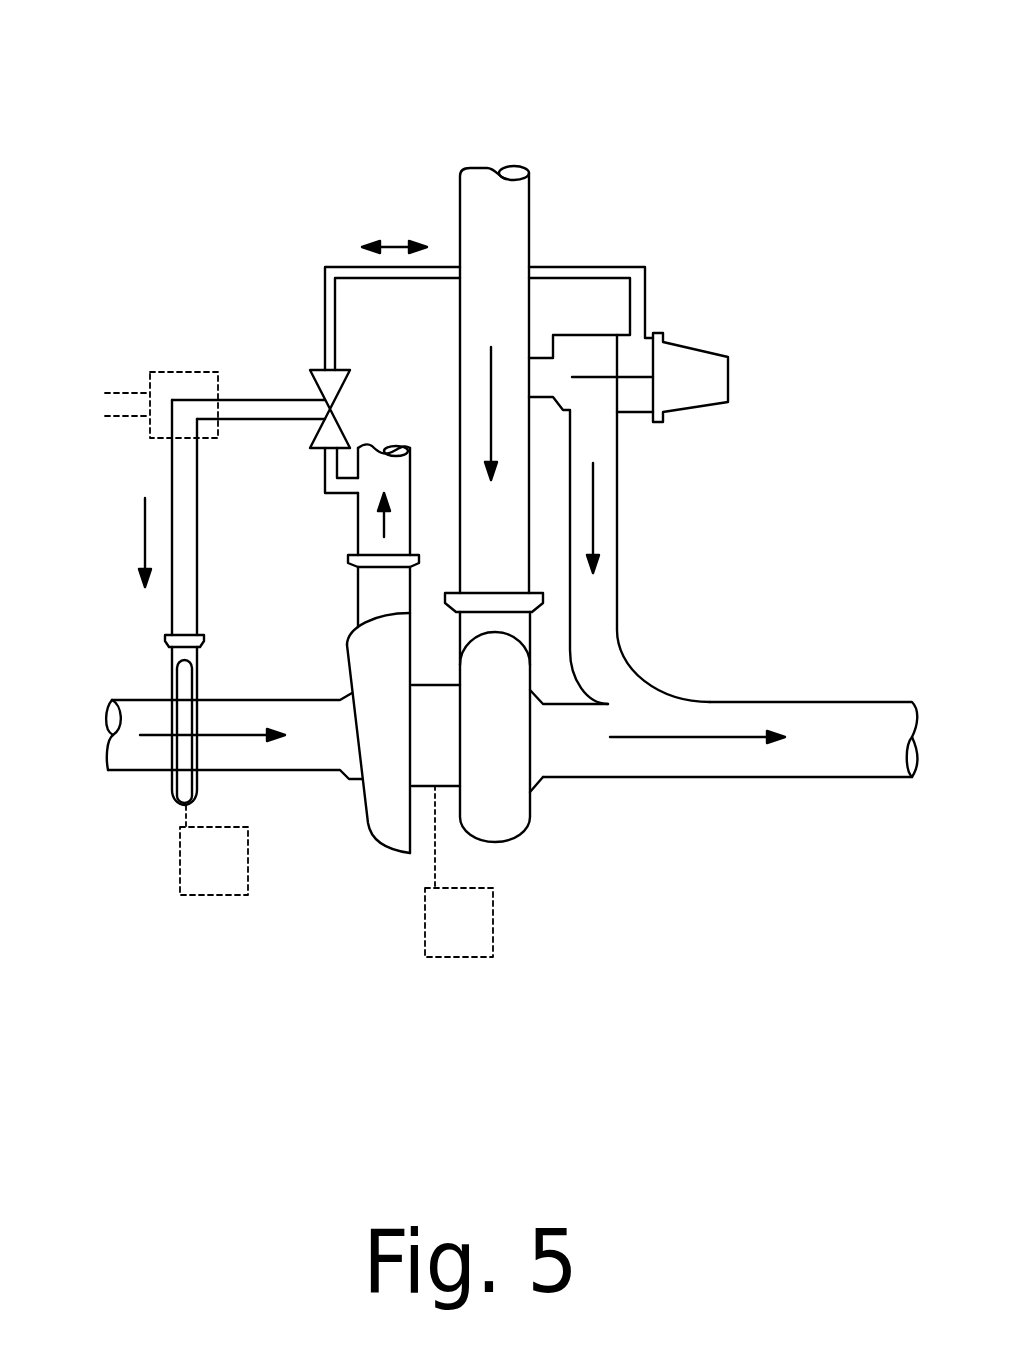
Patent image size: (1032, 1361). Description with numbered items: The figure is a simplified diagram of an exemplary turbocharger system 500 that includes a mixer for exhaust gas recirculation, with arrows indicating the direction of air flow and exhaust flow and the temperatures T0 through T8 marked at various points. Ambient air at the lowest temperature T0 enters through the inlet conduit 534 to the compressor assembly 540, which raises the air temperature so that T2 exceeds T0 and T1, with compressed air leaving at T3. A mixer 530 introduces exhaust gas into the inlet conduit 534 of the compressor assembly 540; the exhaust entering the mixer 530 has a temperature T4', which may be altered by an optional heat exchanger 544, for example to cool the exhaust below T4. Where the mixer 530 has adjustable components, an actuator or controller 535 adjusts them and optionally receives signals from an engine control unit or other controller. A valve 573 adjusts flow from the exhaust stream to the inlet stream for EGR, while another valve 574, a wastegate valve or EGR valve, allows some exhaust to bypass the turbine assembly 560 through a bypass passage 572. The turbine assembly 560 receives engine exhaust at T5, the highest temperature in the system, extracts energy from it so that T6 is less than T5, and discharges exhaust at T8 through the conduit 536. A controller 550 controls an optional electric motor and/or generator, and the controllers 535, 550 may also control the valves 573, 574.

The turbocharger system 500 is at (519, 84).
The mixer 530 is at (147, 815).
The inlet conduit 534 is at (314, 698).
The actuator or controller 535 is at (211, 896).
The conduit 536 is at (565, 780).
The compressor assembly 540 is at (364, 862).
The heat exchanger 544 is at (162, 372).
The controller 550 is at (428, 956).
The turbine assembly 560 is at (532, 862).
The wastegate bypass passage 572 is at (663, 688).
The valve 573 is at (308, 368).
The valve 574 is at (713, 406).